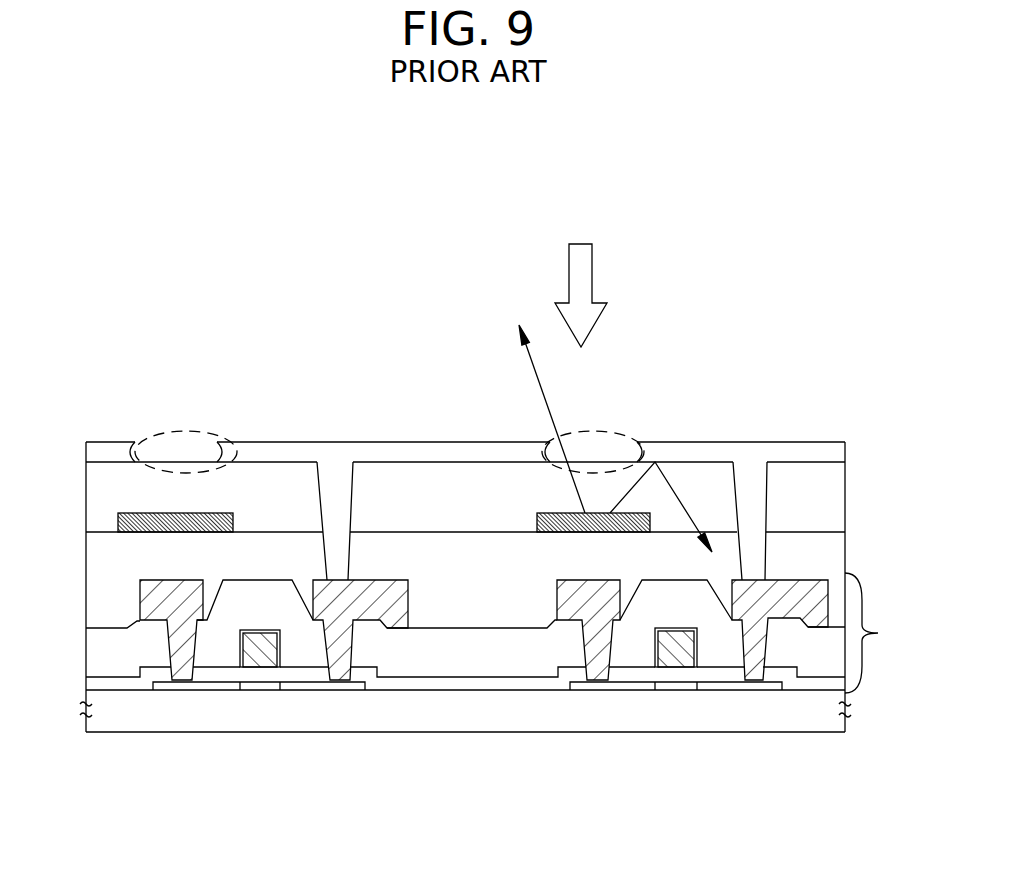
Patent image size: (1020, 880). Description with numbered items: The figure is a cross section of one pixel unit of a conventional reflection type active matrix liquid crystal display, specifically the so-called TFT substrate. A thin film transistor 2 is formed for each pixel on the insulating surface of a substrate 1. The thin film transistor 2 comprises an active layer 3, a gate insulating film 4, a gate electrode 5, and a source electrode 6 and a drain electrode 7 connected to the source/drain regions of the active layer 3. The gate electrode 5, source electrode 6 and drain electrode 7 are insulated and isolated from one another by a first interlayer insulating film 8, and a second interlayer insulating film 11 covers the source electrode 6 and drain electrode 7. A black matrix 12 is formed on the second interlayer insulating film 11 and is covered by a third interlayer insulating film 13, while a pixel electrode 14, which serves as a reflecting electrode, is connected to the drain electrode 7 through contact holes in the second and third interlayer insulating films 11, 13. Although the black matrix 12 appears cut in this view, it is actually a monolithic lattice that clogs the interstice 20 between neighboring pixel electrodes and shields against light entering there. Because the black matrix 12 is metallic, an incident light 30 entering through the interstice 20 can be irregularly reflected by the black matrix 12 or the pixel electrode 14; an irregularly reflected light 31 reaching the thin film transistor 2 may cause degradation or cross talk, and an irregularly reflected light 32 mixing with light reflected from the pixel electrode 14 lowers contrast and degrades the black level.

The substrate 1 is at (818, 728).
The thin film transistor 2 is at (871, 633).
The active layer 3 is at (310, 693).
The gate insulating film 4 is at (100, 682).
The gate electrode 5 is at (263, 665).
The source electrode 6 is at (147, 587).
The drain electrode 7 is at (408, 615).
The first interlayer insulating film 8 is at (97, 642).
The second interlayer insulating film 11 is at (86, 568).
The black matrix 12 is at (173, 537).
The third interlayer insulating film 13 is at (86, 503).
The pixel electrode 14 is at (113, 448).
The interstice 20 is at (182, 432).
The incident light 30 is at (592, 278).
The irregularly reflected light 31 is at (530, 365).
The irregularly reflected light 32 is at (682, 490).